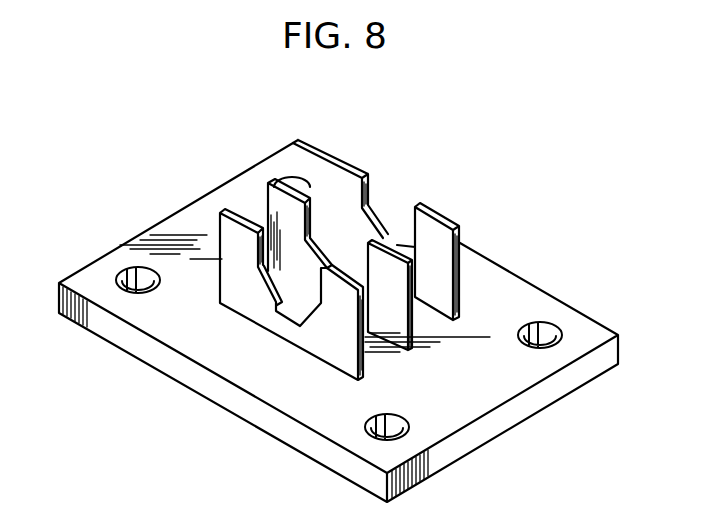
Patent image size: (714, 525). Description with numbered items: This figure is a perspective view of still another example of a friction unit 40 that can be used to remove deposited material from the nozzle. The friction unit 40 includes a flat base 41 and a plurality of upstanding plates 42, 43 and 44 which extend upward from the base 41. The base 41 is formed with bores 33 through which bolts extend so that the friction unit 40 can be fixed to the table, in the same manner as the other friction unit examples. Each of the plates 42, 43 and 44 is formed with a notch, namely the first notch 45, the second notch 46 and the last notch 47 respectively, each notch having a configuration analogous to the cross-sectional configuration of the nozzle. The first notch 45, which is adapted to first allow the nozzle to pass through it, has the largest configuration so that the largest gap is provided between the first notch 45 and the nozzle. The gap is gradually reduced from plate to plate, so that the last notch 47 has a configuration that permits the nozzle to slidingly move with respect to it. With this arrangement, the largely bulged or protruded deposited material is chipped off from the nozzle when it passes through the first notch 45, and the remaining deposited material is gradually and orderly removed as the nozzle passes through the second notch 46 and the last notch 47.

The friction unit 40 is at (531, 122).
The base 41 is at (555, 310).
The bores 33 is at (124, 270).
The upstanding plate 42 is at (227, 210).
The upstanding plate 43 is at (283, 178).
The upstanding plate 44 is at (350, 170).
The first notch 45 is at (267, 232).
The second notch 46 is at (328, 172).
The last notch 47 is at (372, 210).